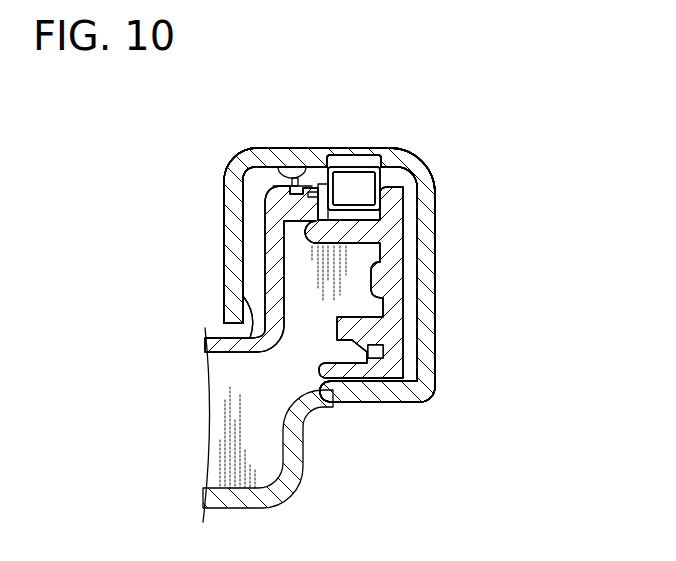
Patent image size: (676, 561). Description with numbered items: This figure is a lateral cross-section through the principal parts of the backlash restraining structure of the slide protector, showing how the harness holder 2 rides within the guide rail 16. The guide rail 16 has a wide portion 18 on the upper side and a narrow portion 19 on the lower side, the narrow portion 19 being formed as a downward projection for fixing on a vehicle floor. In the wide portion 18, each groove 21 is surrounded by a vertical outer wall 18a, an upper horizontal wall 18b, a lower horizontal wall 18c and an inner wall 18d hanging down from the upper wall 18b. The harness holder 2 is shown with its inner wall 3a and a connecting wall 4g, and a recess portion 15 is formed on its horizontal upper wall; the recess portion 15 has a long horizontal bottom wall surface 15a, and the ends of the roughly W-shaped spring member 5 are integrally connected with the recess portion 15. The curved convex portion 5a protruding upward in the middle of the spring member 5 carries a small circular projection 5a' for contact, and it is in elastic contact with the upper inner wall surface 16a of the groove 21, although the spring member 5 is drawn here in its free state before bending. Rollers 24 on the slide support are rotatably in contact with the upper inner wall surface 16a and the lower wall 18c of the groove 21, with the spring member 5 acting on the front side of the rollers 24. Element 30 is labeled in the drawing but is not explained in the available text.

The harness holder 2 is at (403, 302).
The inner wall 3a is at (265, 270).
The connecting wall 4g is at (225, 289).
The spring member 5 is at (378, 157).
The curved convex portion 5a is at (333, 233).
The small circular projection 5a' is at (355, 135).
The recess portion 15 is at (402, 183).
The bottom wall surface 15a is at (387, 217).
The guide rail 16 is at (440, 324).
The upper inner wall surface 16a is at (279, 162).
The wide portion 18 is at (435, 232).
The vertical outer wall 18a is at (329, 275).
The upper horizontal wall 18b is at (318, 146).
The lower horizontal wall 18c is at (324, 380).
The inner wall 18d is at (224, 203).
The narrow portion 19 is at (305, 467).
The groove 21 is at (253, 208).
The roller 24 is at (413, 400).
The holding portion 30 is at (390, 403).